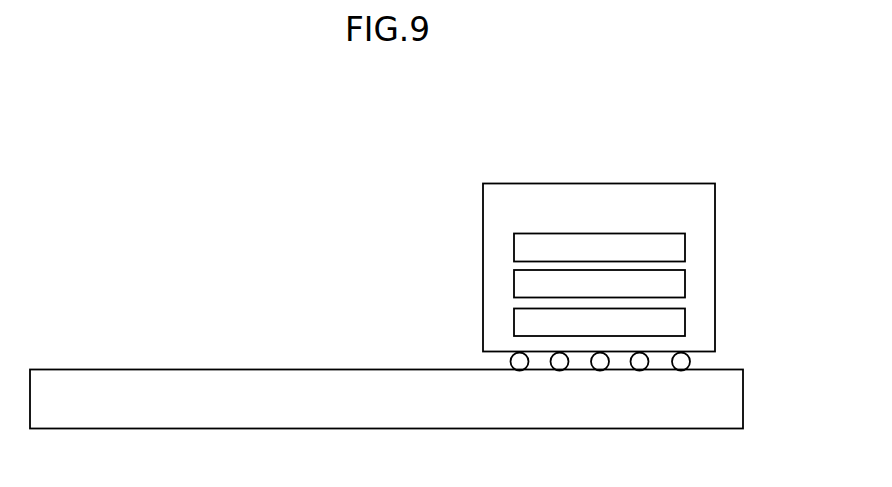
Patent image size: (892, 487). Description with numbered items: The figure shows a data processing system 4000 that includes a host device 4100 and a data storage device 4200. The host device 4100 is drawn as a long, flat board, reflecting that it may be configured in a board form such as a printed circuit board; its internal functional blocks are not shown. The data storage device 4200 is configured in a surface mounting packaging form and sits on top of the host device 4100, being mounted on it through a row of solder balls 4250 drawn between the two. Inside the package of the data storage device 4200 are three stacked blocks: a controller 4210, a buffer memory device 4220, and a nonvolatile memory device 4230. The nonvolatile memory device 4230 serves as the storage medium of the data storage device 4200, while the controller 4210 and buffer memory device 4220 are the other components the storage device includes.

The data processing system 4000 is at (90, 125).
The host device 4100 is at (386, 399).
The data storage device 4200 is at (599, 268).
The controller 4210 is at (599, 250).
The buffer memory device 4220 is at (599, 286).
The nonvolatile memory device 4230 is at (599, 325).
The solder ball 4250 is at (700, 360).